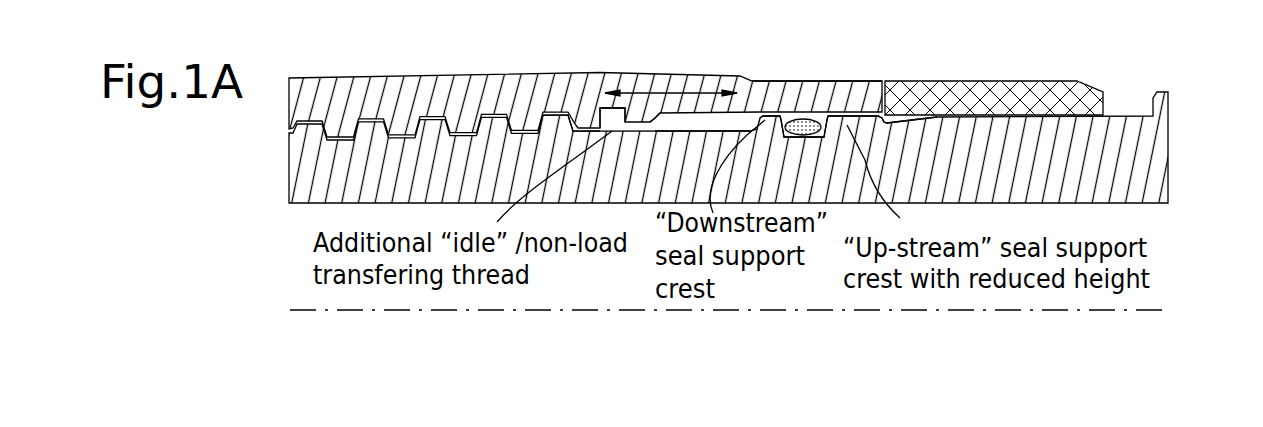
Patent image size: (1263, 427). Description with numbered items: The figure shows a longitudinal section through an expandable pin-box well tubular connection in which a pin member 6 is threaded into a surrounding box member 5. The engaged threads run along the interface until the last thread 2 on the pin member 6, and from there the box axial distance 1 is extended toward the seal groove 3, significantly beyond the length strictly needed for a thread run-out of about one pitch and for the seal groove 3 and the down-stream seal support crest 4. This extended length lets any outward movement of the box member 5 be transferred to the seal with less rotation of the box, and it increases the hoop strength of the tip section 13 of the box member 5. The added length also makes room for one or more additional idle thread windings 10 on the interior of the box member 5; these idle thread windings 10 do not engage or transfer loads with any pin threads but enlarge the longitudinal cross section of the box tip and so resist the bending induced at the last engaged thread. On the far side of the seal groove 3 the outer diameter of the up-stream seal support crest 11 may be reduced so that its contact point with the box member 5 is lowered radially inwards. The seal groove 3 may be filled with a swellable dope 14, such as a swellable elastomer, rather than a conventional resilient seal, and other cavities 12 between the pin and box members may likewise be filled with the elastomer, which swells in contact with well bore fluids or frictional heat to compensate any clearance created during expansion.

The box axial distance 1 is at (700, 95).
The last thread 2 is at (600, 105).
The seal groove 3 is at (849, 112).
The down-stream seal support crest 4 is at (783, 96).
The box member 5 is at (360, 87).
The pin member 6 is at (322, 203).
The idle thread windings 10 is at (658, 117).
The up-stream seal support crest 11 is at (877, 106).
The other cavities 12 is at (608, 117).
The tip section 13 is at (811, 62).
The swellable dope 14 is at (823, 111).